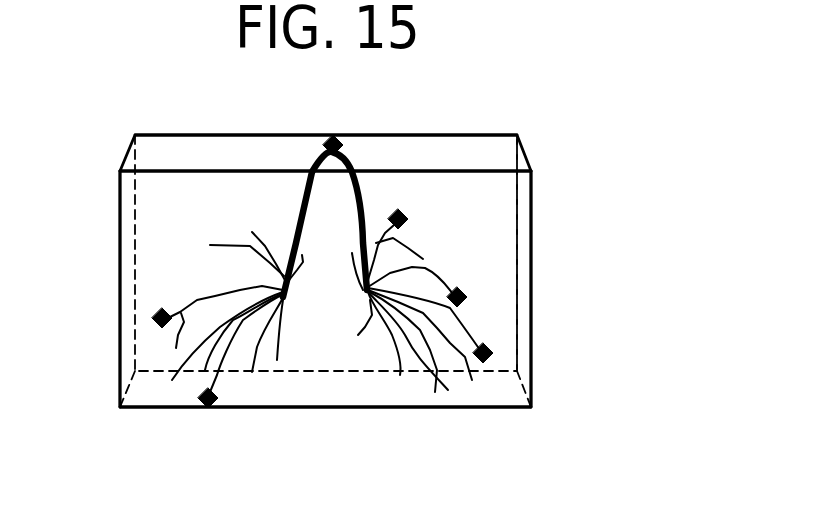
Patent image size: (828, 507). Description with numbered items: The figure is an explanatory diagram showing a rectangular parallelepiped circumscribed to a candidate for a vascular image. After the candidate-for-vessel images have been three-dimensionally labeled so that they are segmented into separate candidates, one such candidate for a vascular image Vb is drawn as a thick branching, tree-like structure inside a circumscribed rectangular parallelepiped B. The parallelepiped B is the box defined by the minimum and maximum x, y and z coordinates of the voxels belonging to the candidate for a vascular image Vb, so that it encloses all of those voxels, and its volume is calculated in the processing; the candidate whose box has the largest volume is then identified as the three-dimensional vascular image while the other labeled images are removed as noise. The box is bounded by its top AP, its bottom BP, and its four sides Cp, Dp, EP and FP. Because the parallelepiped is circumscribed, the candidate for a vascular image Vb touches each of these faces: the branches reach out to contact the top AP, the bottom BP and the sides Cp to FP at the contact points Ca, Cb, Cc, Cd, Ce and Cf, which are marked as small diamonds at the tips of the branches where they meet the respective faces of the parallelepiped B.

The circumscribed rectangular parallelepiped B is at (560, 152).
The side of the circumscribed rectangular parallelepiped EP is at (167, 212).
The side of the circumscribed rectangular parallelepiped FP is at (130, 285).
The top of the circumscribed rectangular parallelepiped AP is at (440, 153).
The bottom of the circumscribed rectangular parallelepiped BP is at (377, 385).
The side of the circumscribed rectangular parallelepiped Cp is at (480, 228).
The side of the circumscribed rectangular parallelepiped Dp is at (522, 267).
The candidate for a vascular image Vb is at (307, 178).
The contact point Ca is at (341, 139).
The contact point Cb is at (212, 414).
The contact point Cc is at (399, 203).
The contact point Cd is at (490, 348).
The contact point Ce is at (466, 281).
The contact point Cf is at (157, 322).